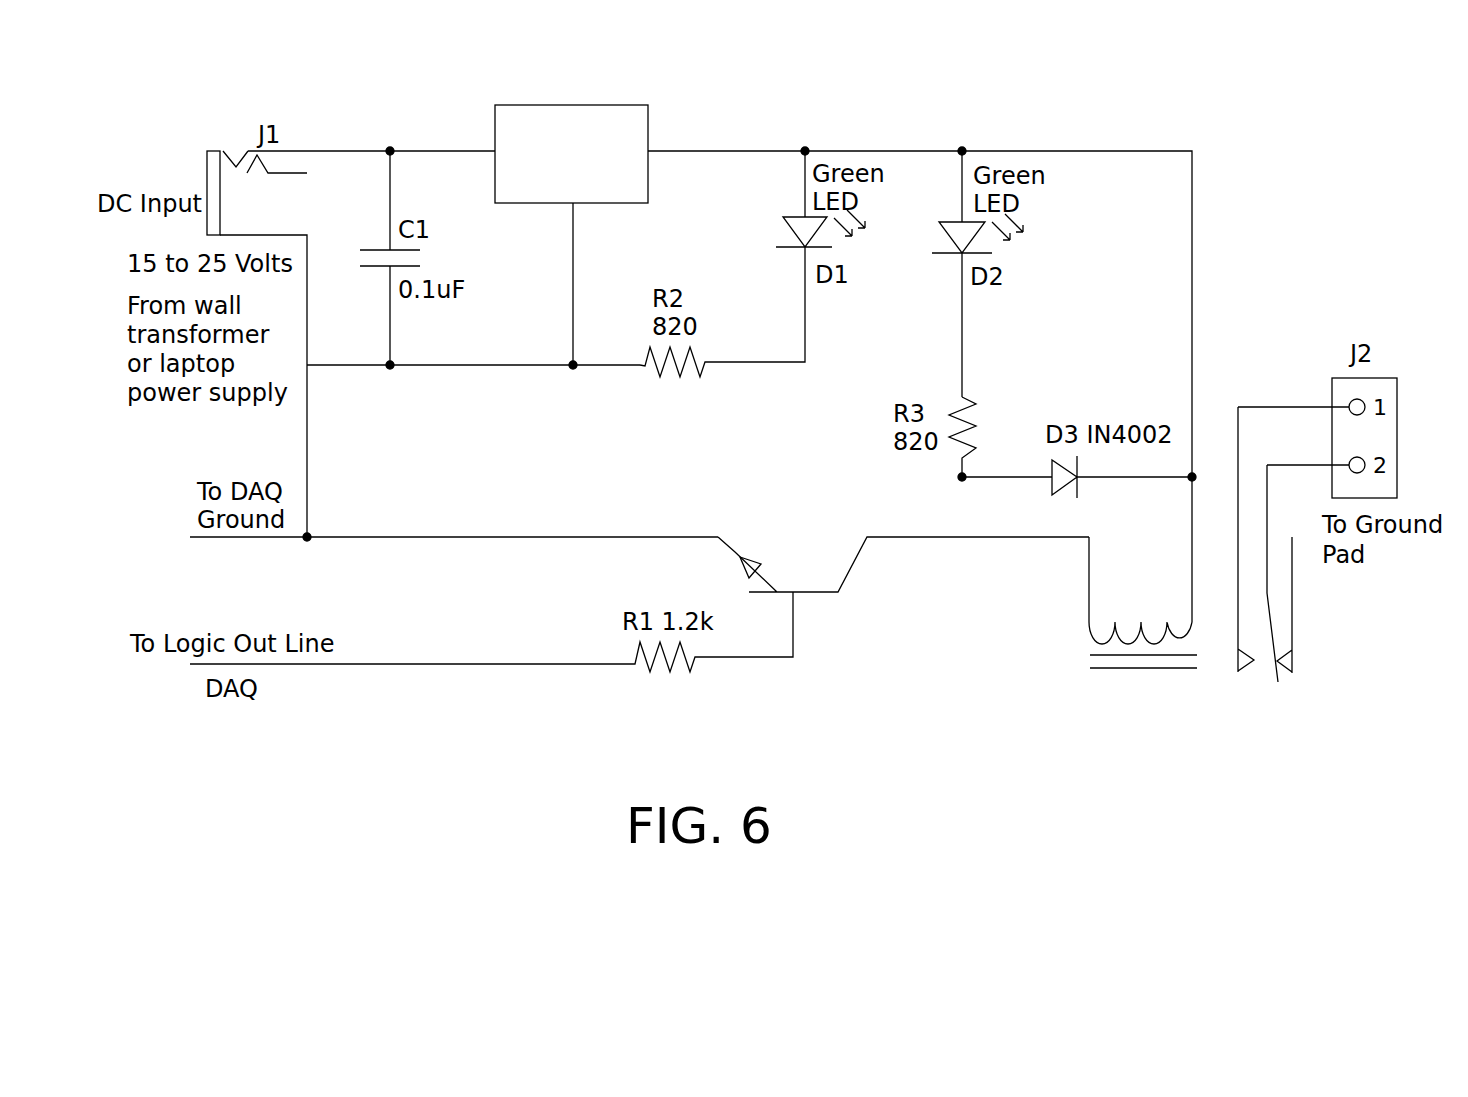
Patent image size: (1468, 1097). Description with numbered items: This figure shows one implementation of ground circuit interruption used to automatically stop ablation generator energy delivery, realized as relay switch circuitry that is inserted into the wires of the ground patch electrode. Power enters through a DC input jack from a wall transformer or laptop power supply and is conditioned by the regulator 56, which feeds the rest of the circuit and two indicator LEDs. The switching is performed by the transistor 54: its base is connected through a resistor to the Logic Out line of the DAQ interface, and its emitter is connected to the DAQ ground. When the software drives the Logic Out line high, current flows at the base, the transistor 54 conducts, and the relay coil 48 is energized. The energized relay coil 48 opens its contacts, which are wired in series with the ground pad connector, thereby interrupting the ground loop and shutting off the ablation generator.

The 12 volt regulator 56 is at (673, 132).
The transistor Q1 54 is at (893, 579).
The relay coil 48 is at (1173, 590).